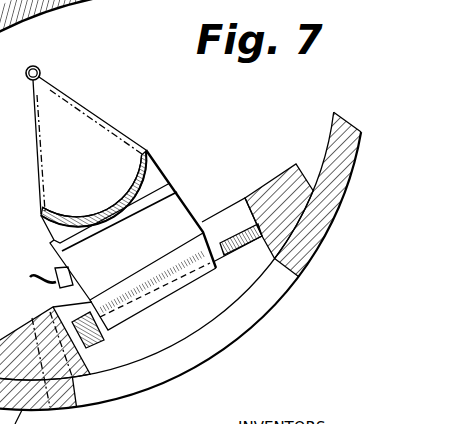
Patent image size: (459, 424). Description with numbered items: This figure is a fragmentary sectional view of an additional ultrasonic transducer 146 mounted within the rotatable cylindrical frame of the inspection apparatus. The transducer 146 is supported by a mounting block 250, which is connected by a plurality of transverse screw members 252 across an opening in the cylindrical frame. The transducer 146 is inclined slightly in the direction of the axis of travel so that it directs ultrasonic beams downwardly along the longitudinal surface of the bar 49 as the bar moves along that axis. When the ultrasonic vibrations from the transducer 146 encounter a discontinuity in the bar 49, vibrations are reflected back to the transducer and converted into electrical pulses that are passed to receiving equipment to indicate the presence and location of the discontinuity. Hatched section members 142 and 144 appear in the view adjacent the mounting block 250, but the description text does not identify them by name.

The bar 49 is at (42, 77).
The hook arm 142 is at (36, 271).
The hatched ring member 144 is at (285, 272).
The transducer 146 is at (186, 184).
The mounting block 250 is at (127, 311).
The transverse screw members 252 is at (240, 250).